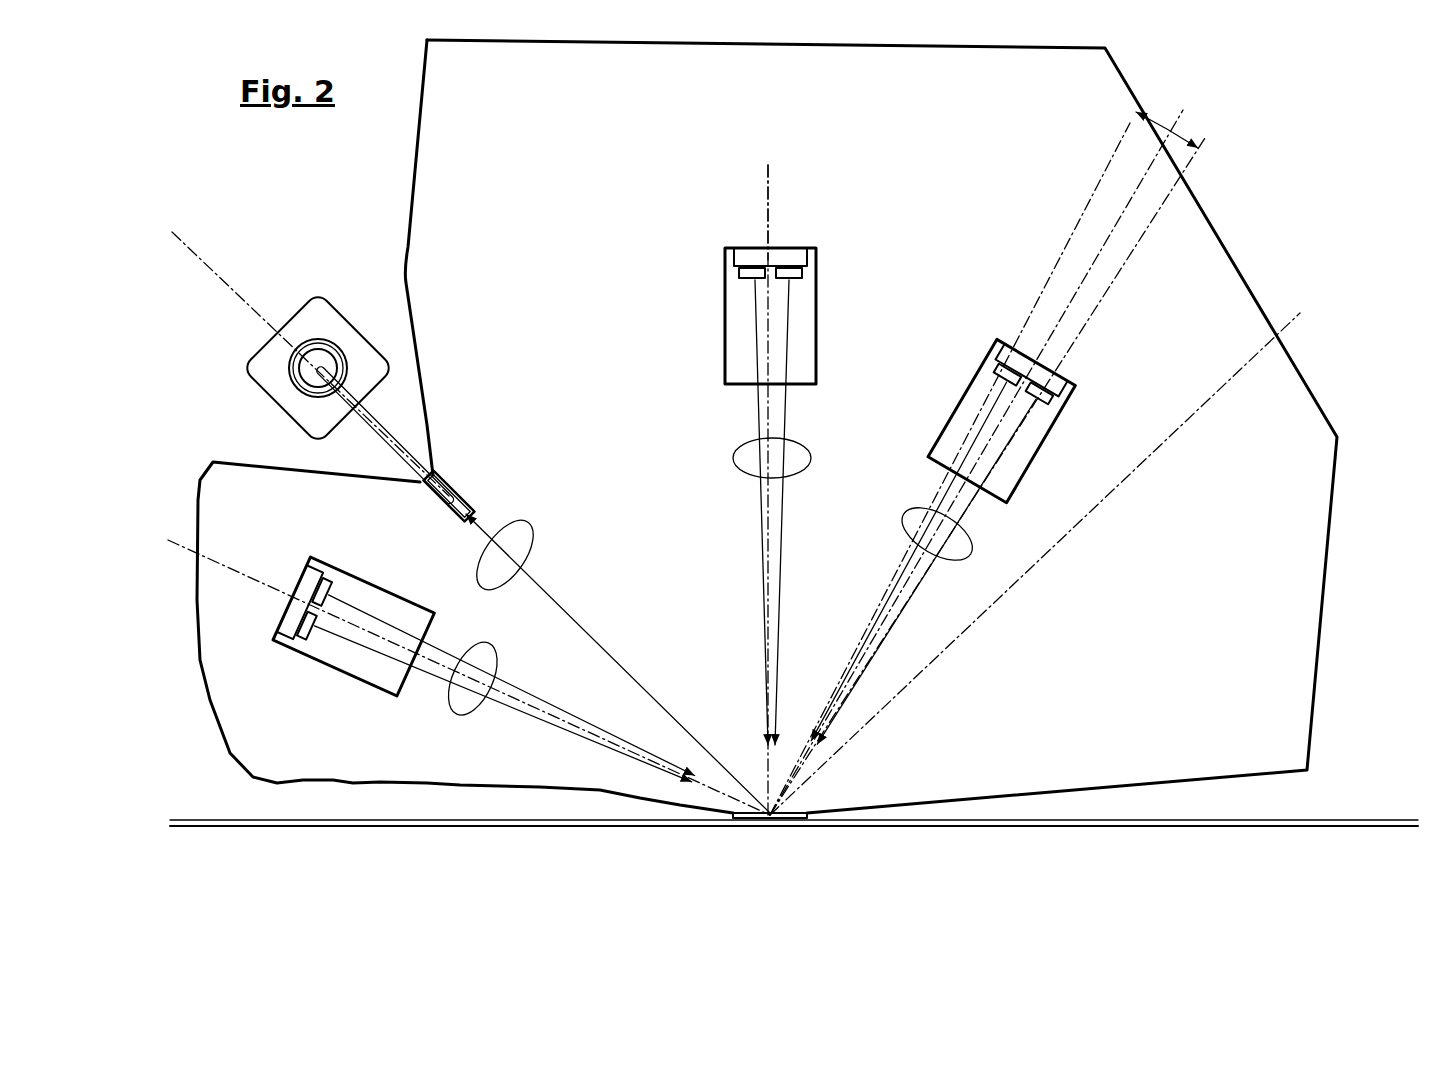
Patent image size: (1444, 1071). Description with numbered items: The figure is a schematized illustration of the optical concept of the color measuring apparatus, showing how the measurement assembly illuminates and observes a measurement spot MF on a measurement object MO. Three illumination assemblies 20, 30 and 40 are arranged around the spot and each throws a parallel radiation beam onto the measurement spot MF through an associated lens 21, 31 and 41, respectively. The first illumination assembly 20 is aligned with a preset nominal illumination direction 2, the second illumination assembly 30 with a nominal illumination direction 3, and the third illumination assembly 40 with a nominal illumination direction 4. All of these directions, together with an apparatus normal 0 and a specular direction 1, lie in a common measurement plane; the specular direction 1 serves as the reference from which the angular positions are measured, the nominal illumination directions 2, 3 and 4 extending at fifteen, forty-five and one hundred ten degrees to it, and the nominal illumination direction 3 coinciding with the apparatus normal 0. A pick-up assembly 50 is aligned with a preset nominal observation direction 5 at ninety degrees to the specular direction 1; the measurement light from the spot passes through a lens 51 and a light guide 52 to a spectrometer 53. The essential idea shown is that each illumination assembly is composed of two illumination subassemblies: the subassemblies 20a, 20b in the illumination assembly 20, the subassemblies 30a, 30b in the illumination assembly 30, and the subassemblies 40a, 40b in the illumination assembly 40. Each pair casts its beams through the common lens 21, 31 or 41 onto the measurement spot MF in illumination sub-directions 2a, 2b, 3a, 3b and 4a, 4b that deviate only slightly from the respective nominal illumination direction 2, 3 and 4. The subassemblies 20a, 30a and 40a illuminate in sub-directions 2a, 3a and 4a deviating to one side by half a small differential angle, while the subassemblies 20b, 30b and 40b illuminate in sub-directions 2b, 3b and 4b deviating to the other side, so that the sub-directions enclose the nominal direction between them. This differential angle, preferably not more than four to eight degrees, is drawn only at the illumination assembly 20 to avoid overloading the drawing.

The apparatus normal 0 is at (772, 165).
The specular direction 1 is at (1228, 382).
The nominal illumination direction 2 is at (1108, 240).
The nominal illumination direction 3 is at (765, 165).
The nominal illumination direction 4 is at (183, 550).
The nominal observation direction 5 is at (226, 290).
The illumination assembly 20 is at (965, 379).
The illumination subassembly 20a is at (1040, 395).
The illumination subassembly 20b is at (1003, 365).
The illumination sub-direction 2a is at (1020, 420).
The illumination sub-direction 2b is at (983, 410).
The lens 21 is at (912, 525).
The illumination assembly 30 is at (720, 298).
The illumination subassembly 30a is at (793, 266).
The illumination subassembly 30b is at (745, 266).
The illumination sub-direction 3a is at (786, 410).
The illumination sub-direction 3b is at (752, 407).
The lens 31 is at (748, 466).
The illumination assembly 40 is at (306, 667).
The illumination subassembly 40a is at (320, 590).
The illumination subassembly 40b is at (298, 617).
The illumination sub-direction 4a is at (510, 690).
The illumination sub-direction 4b is at (521, 737).
The lens 41 is at (470, 703).
The pick-up assembly 50 is at (421, 368).
The lens 51 is at (528, 540).
The light guide 52 is at (415, 457).
The spectrometer 53 is at (285, 398).
The measurement spot MF is at (790, 825).
The measurement object MO is at (1340, 826).